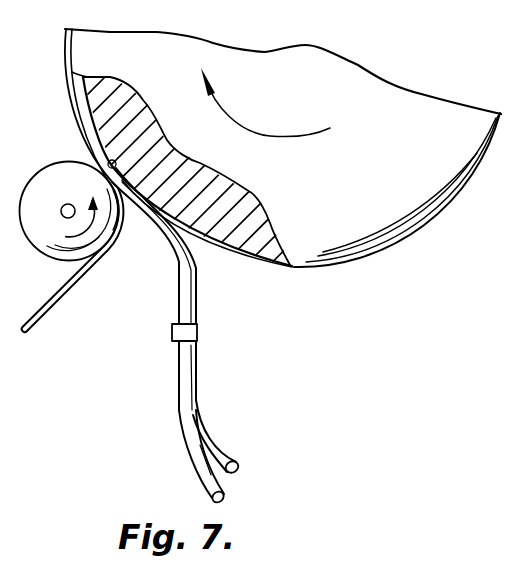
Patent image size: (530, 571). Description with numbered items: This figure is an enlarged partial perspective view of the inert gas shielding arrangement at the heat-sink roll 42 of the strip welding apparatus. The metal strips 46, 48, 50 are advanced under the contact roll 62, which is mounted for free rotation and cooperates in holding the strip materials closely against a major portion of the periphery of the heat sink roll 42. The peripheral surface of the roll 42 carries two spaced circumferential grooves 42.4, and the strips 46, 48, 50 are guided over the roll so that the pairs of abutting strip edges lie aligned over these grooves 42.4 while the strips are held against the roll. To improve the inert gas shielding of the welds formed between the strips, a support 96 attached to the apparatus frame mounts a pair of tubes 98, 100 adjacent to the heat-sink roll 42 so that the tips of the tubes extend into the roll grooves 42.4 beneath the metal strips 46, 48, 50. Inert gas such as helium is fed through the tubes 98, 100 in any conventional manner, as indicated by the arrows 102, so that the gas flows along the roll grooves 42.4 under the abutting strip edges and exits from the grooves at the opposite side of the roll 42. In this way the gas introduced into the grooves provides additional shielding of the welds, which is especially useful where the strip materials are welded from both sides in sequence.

The heat sink roll 42 is at (408, 197).
The circumferential grooves 42.4 is at (240, 251).
The metal strip 46 is at (82, 273).
The metal strip 48 is at (82, 273).
The metal strip 50 is at (43, 312).
The contact roll 62 is at (40, 170).
The support 96 is at (197, 333).
The tube 98 is at (197, 410).
The tube 100 is at (200, 482).
The arrows 102 is at (243, 484).